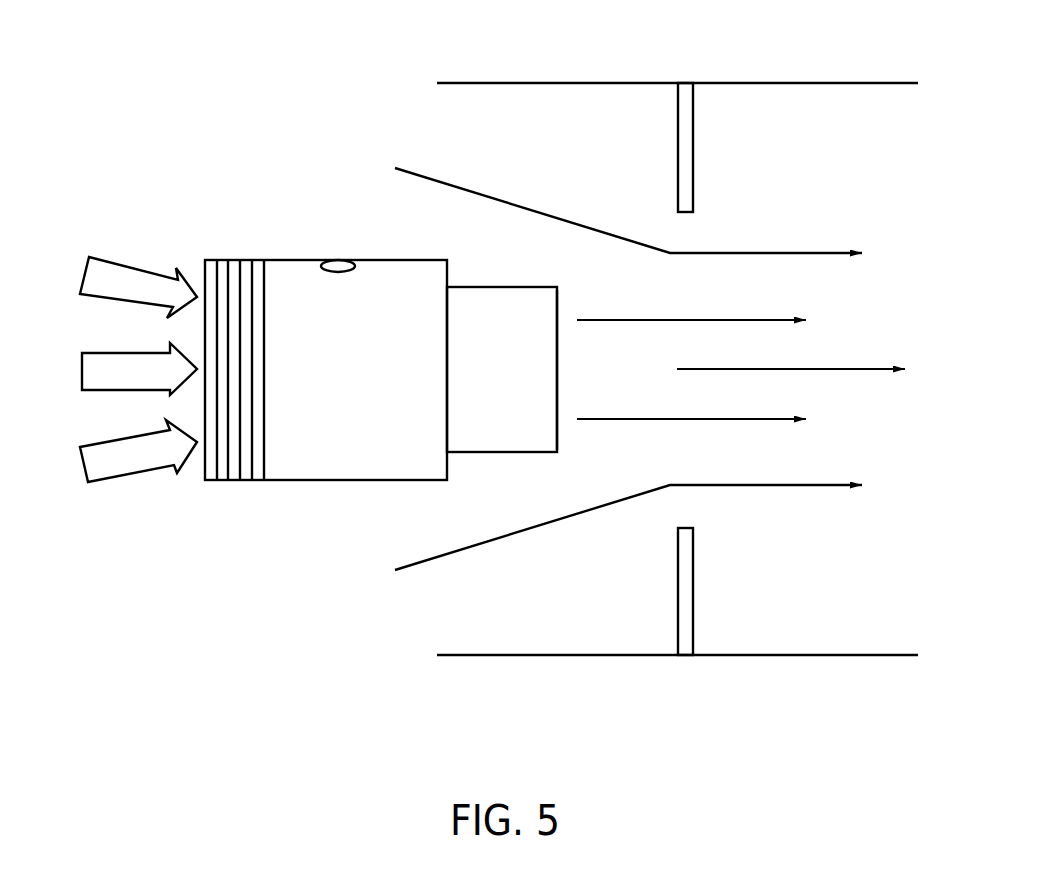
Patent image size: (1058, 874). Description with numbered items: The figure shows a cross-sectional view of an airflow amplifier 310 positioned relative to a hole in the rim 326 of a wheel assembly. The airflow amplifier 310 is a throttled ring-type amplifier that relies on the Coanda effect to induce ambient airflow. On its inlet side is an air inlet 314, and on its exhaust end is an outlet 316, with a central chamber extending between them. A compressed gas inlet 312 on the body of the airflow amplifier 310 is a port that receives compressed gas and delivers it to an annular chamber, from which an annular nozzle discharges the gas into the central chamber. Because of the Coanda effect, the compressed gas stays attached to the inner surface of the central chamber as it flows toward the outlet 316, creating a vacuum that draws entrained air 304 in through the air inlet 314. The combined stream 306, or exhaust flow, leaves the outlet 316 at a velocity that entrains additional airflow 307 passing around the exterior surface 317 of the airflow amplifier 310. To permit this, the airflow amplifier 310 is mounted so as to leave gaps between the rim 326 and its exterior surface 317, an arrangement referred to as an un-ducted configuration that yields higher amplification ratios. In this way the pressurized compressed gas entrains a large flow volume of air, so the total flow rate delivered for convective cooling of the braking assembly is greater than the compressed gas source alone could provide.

The entrained air 304 is at (98, 277).
The combined stream 306 is at (861, 371).
The additional airflow 307 is at (480, 196).
The airflow amplifier 310 is at (288, 275).
The compressed gas inlet 312 is at (337, 265).
The air inlet 314 is at (205, 463).
The outlet 316 is at (558, 425).
The exterior surface 317 is at (483, 452).
The rim 326 is at (682, 135).